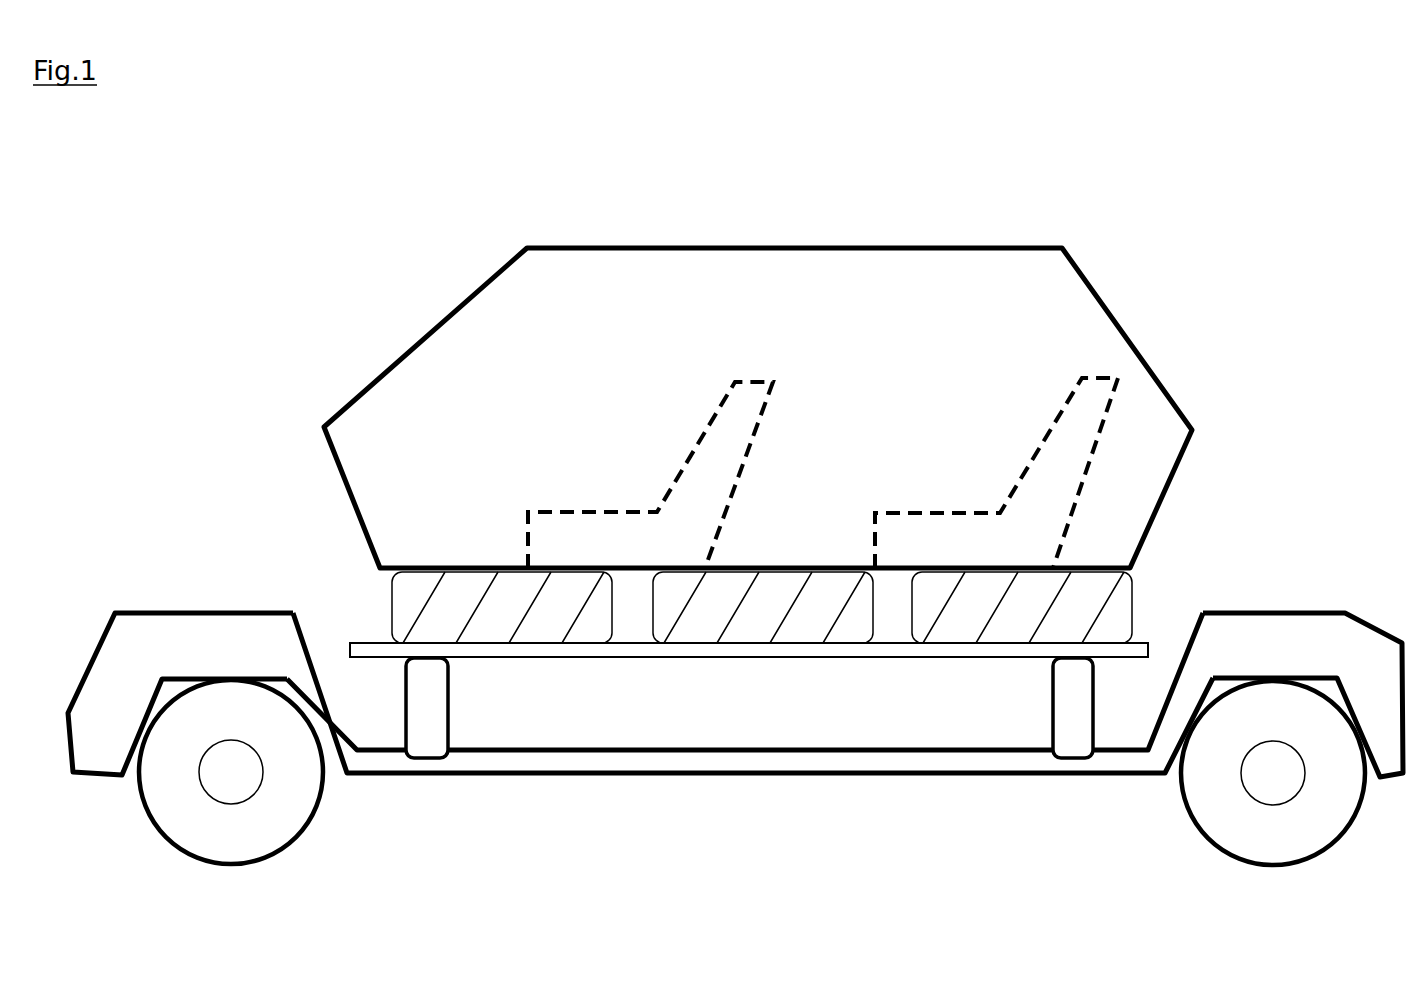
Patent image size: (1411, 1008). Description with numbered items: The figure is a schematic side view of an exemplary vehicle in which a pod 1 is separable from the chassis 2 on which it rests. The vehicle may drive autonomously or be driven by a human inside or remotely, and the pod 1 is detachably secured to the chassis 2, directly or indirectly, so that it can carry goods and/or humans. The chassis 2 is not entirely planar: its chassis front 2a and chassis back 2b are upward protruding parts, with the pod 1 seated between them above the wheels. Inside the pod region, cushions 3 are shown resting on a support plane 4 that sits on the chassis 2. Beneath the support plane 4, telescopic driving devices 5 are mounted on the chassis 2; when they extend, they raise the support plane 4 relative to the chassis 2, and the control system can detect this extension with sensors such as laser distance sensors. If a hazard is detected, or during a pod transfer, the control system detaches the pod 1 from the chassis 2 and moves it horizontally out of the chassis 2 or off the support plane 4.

The pod 1 is at (518, 235).
The chassis 2 is at (223, 603).
The chassis front 2a is at (255, 640).
The chassis back 2b is at (1331, 654).
The cushions 3 is at (412, 581).
The support plane 4 is at (1152, 645).
The telescopic driving devices 5 is at (1050, 707).